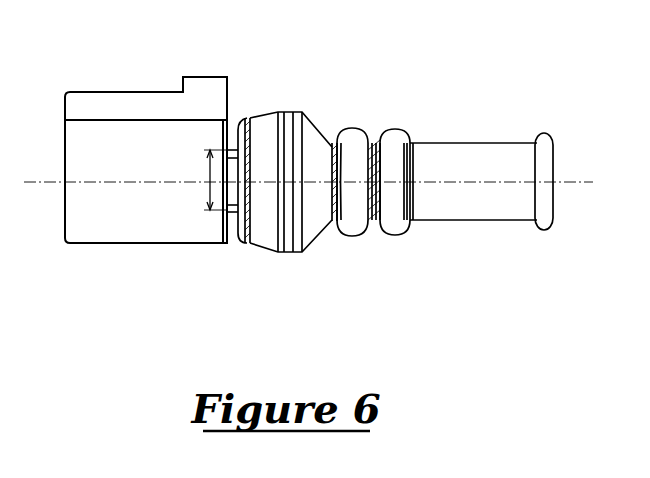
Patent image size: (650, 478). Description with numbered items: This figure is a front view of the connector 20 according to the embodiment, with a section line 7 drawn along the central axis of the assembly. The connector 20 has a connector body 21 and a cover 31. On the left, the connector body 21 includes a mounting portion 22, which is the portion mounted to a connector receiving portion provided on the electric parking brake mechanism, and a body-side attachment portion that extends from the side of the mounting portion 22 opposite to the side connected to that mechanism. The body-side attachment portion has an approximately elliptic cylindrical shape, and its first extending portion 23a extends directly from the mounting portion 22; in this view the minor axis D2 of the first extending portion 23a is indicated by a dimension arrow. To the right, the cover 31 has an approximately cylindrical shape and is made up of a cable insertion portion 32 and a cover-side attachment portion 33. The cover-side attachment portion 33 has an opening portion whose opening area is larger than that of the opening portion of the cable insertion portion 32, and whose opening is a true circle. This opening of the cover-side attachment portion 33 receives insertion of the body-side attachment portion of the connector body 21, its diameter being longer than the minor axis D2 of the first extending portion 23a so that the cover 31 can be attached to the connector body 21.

The section line 7- 7 is at (24, 182).
The connector 20 is at (489, 62).
The connector body 21 is at (116, 92).
The mounting portion 22 is at (79, 92).
The first extending portion 23a is at (229, 214).
The cover 31 is at (395, 136).
The cable insertion portion 32 is at (516, 145).
The cover-side attachment portion 33 is at (266, 125).
The minor axis D2 is at (206, 194).